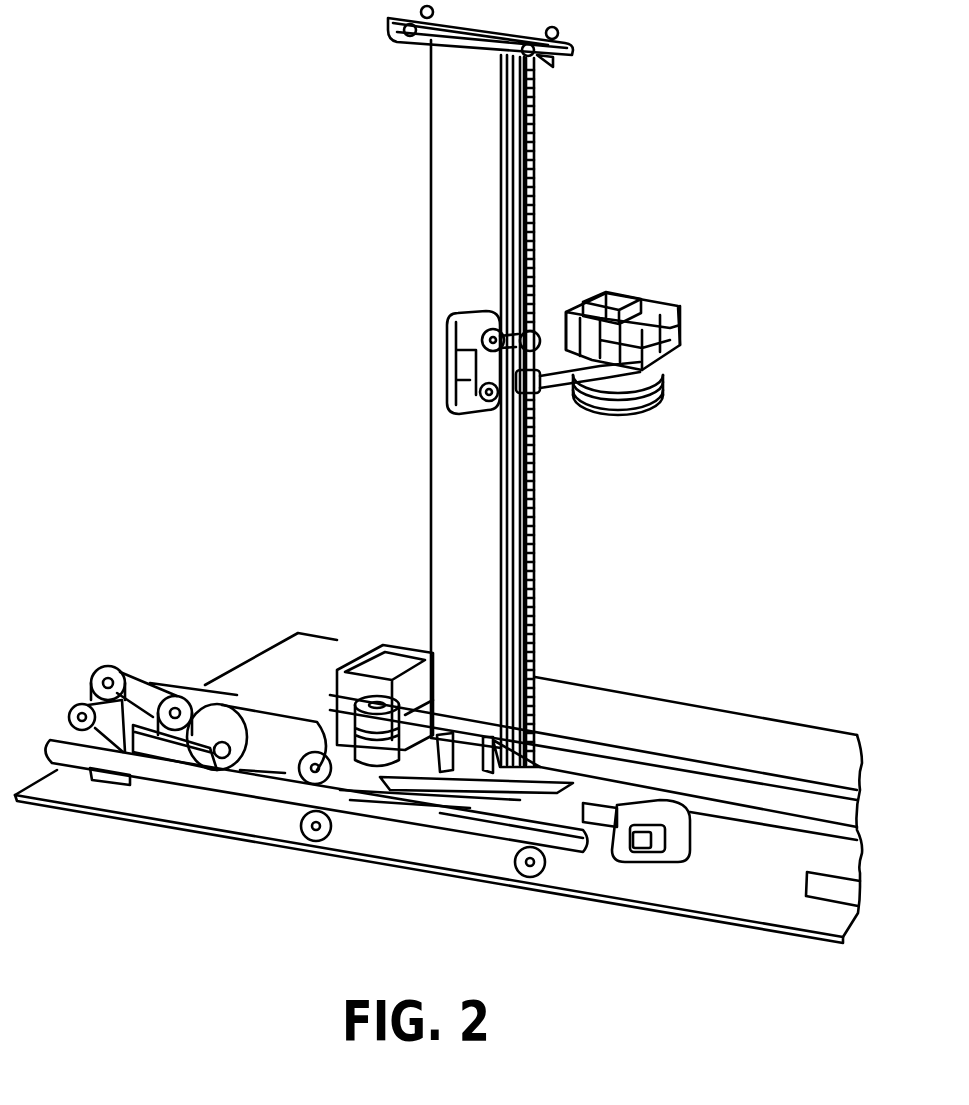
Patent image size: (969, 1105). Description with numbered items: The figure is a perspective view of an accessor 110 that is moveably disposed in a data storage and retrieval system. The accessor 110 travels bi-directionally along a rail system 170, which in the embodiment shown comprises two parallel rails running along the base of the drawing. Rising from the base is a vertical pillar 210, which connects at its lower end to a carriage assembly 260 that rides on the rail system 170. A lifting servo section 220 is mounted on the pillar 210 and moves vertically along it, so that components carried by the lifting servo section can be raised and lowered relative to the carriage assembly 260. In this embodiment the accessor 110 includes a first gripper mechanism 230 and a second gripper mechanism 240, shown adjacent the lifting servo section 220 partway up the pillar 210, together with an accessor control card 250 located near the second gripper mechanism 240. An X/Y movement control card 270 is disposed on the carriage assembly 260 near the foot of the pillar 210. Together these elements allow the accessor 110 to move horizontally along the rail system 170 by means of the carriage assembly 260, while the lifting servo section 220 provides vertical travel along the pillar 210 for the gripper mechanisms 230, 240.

The accessor 110 is at (403, 262).
The rail system 170 is at (760, 813).
The vertical pillar 210 is at (455, 170).
The lifting servo section 220 is at (552, 388).
The first gripper mechanism 230 is at (655, 380).
The second gripper mechanism 240 is at (660, 300).
The accessor control card 250 is at (615, 297).
The carriage assembly 260 is at (460, 770).
The X/Y movement control card 270 is at (397, 663).